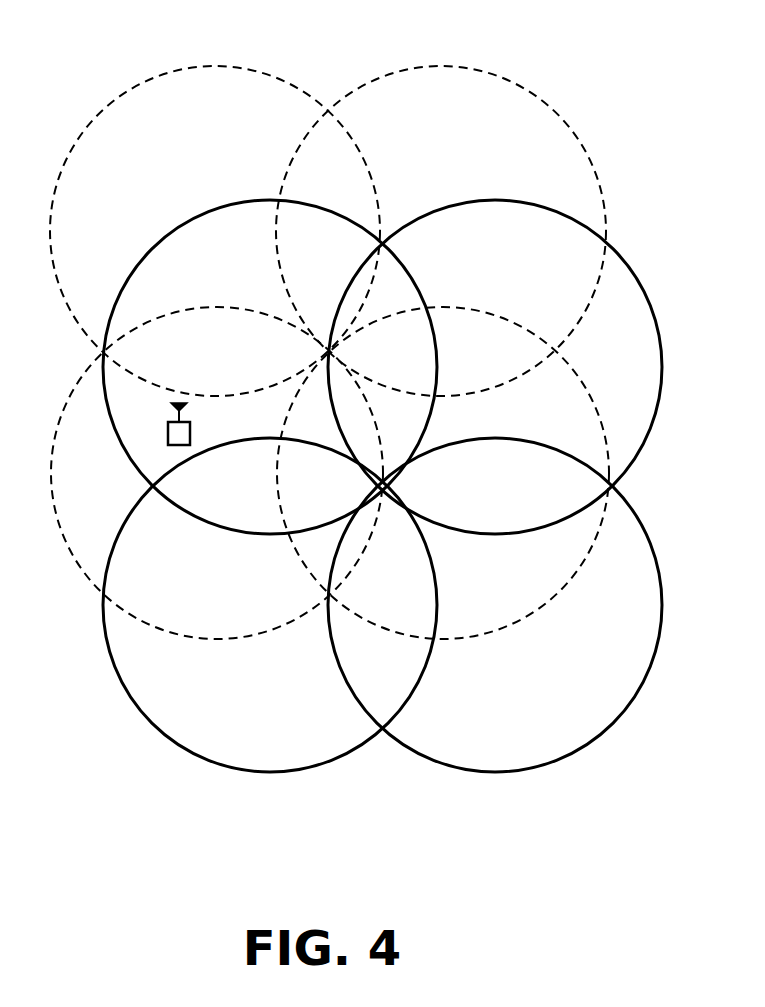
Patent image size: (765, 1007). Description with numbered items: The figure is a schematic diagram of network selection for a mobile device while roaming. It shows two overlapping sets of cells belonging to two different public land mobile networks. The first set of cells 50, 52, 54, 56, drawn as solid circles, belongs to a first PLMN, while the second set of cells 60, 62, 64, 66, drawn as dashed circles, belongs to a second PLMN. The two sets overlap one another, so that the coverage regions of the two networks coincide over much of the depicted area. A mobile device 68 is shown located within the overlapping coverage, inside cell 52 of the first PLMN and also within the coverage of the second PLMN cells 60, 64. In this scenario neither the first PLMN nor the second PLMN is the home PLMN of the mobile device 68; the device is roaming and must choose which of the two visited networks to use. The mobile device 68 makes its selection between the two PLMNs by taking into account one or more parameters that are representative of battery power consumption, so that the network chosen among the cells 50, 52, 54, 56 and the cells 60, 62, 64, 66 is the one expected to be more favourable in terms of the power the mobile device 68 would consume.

The cell 50 is at (268, 774).
The cell 52 is at (166, 236).
The cell 54 is at (493, 198).
The cell 56 is at (496, 774).
The cell 60 is at (214, 66).
The cell 62 is at (443, 66).
The cell 64 is at (214, 308).
The cell 66 is at (490, 314).
The mobile device 68 is at (168, 440).